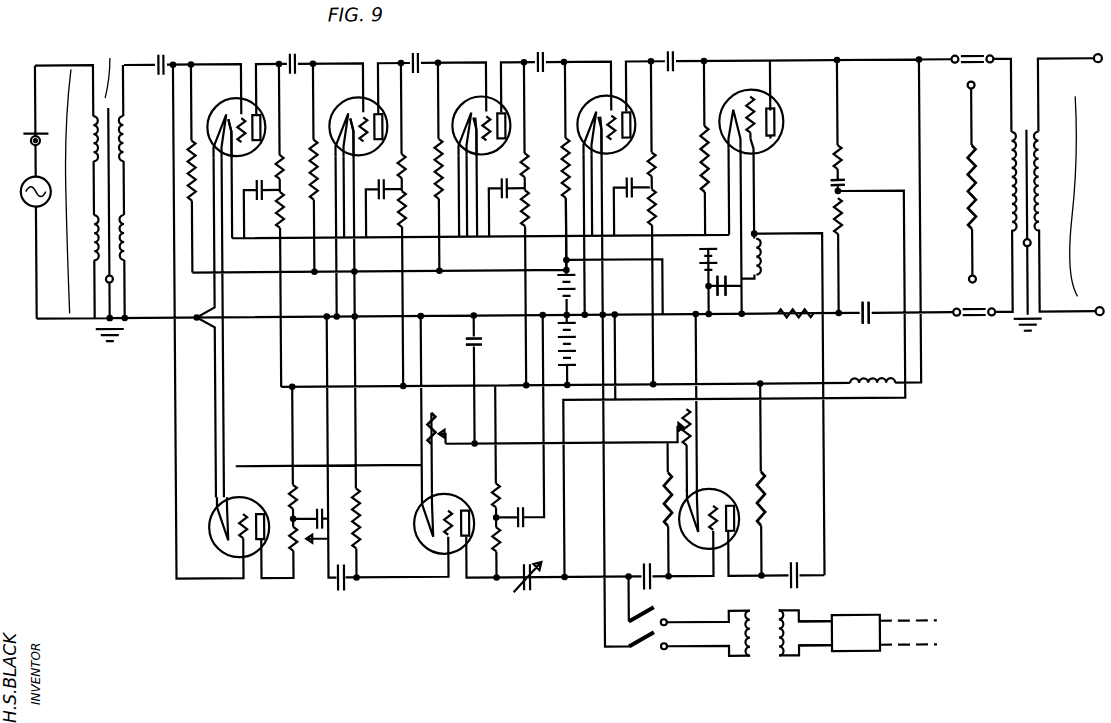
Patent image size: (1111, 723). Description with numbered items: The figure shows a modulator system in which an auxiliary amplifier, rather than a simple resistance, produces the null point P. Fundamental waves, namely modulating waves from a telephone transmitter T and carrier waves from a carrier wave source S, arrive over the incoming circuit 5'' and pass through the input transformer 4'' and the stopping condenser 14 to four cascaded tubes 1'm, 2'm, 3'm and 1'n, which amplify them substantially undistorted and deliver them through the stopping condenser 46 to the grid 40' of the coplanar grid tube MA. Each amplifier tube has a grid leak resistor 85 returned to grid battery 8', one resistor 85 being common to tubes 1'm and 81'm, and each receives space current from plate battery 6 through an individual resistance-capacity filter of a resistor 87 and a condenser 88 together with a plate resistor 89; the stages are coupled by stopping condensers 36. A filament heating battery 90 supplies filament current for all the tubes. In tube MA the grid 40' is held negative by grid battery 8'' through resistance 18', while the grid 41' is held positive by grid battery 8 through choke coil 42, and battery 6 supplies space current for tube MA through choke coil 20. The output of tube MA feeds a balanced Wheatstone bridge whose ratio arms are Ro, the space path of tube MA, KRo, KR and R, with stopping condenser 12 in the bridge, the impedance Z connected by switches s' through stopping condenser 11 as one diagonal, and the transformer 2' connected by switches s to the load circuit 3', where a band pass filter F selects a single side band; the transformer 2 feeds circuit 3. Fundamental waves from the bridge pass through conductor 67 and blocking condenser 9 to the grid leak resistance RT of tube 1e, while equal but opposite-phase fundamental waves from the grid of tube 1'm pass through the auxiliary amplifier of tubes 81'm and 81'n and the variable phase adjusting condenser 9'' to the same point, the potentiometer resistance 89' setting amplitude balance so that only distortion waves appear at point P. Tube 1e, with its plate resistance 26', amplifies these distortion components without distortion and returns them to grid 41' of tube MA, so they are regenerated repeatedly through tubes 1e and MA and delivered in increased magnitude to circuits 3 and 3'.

The input transformer 4'' is at (107, 69).
The incoming circuit 5'' is at (76, 191).
The telephone transmitter T is at (33, 131).
The carrier wave source S is at (38, 200).
The stopping condenser 14 is at (172, 44).
The stopping condenser 36 is at (340, 604).
The stopping condenser 46 is at (675, 52).
The grid leak resistor 85 is at (360, 505).
The plate resistor 89 is at (448, 309).
The resistor 87 is at (485, 497).
The condenser 88 is at (519, 506).
The amplifier tube 1'm is at (232, 122).
The amplifier tube 2'm is at (354, 121).
The amplifier tube 3'm is at (477, 120).
The amplifier tube 1'n is at (603, 119).
The coplanar grid tube MA is at (737, 106).
The grid 40' is at (794, 81).
The grid 41' is at (764, 152).
The ratio arm Ro is at (774, 138).
The resistance 18' is at (693, 153).
The ratio arm R is at (846, 166).
The stopping condenser 12 is at (847, 185).
The null point P is at (565, 575).
The ratio arm KR is at (846, 218).
The choke coil 42 is at (760, 268).
The grid battery 8'' is at (700, 259).
The grid battery 8 is at (719, 307).
The grid battery 8' is at (553, 287).
The plate battery 6 is at (577, 349).
The filament heating battery 90 is at (480, 347).
The ratio arm KRo is at (803, 322).
The stopping condenser 11 is at (866, 326).
The conductor 67 is at (853, 395).
The choke coil 20 is at (890, 390).
The switch s' is at (973, 184).
The impedance Z is at (968, 165).
The transformer 2 is at (1025, 129).
The circuit 3 is at (1070, 196).
The auxiliary amplifier tube 81'm is at (226, 538).
The potentiometer resistance 89' is at (303, 565).
The auxiliary amplifier tube 81'n is at (432, 495).
The variable phase adjusting condenser 9'' is at (530, 587).
The blocking condenser 9 is at (716, 567).
The grid leak resistance RT is at (662, 493).
The tube 1e is at (700, 548).
The resistance 26' is at (779, 498).
The switch s is at (653, 651).
The transformer 2' is at (764, 652).
The load circuit 3' is at (816, 643).
The band pass filter F is at (856, 655).